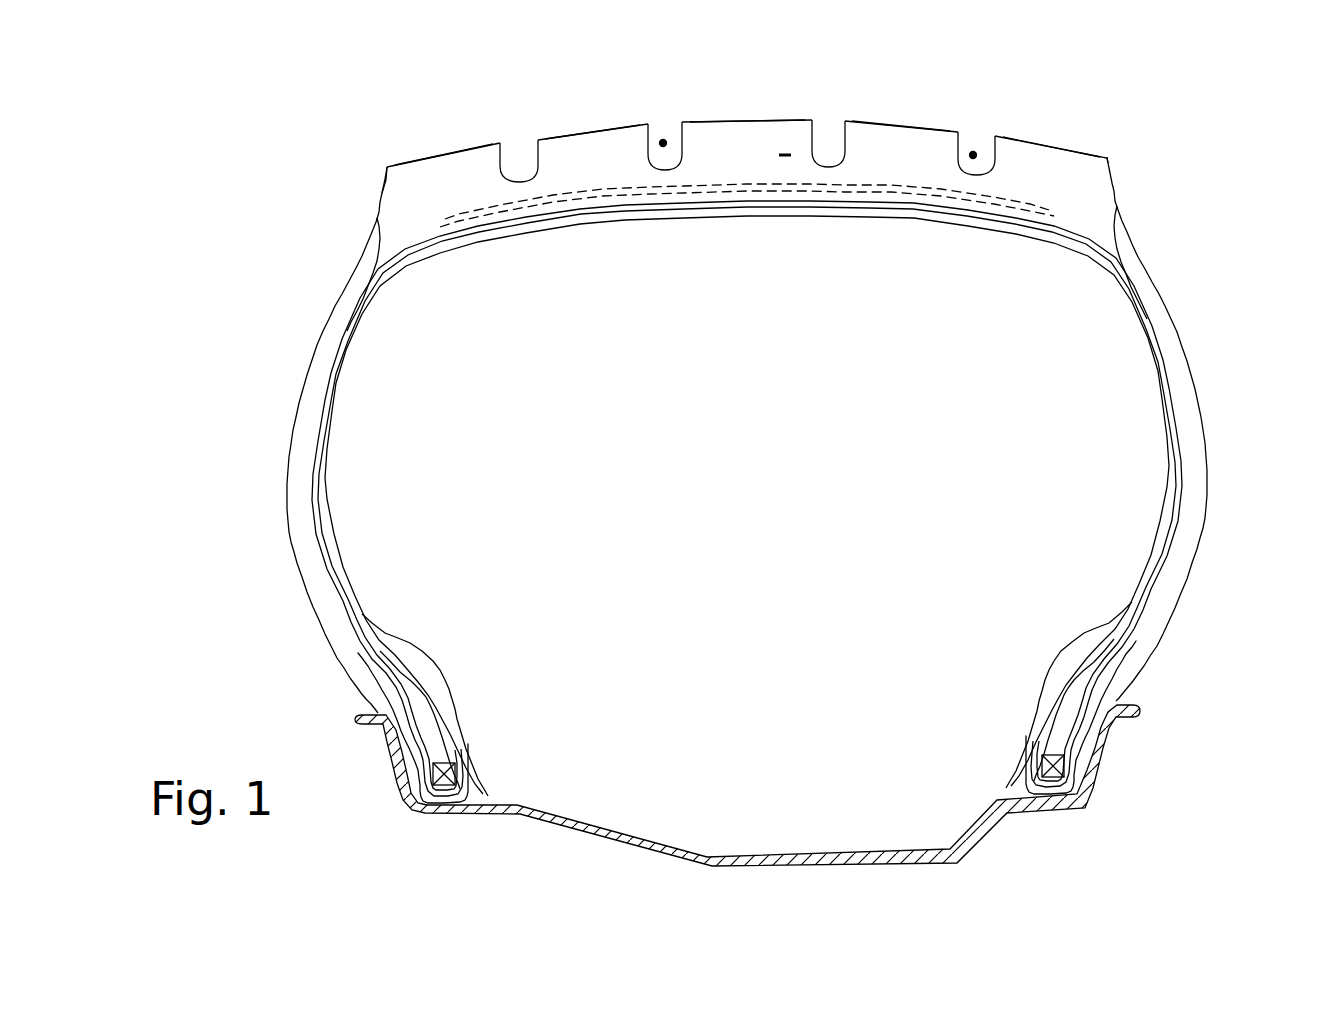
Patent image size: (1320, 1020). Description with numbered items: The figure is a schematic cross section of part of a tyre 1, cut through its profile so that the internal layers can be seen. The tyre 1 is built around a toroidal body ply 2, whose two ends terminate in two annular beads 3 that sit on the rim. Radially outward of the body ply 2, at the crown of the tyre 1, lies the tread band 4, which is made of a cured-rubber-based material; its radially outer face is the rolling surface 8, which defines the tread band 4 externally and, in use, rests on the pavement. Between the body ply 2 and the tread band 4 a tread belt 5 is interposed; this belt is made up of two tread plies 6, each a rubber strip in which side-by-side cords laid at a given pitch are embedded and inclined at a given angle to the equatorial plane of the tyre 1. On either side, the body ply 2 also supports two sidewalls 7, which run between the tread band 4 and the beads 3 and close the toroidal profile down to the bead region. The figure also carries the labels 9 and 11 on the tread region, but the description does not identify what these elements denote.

The tyre 1 is at (245, 160).
The toroidal body ply 2 is at (347, 320).
The annular beads 3 is at (468, 681).
The tread band 4 is at (511, 50).
The tread belt 5 is at (751, 172).
The tread plies 6 is at (795, 192).
The sidewalls 7 is at (297, 467).
The rolling surface 8 is at (461, 141).
The tread wear indicator 9 is at (663, 140).
The tread rib 11 is at (603, 140).